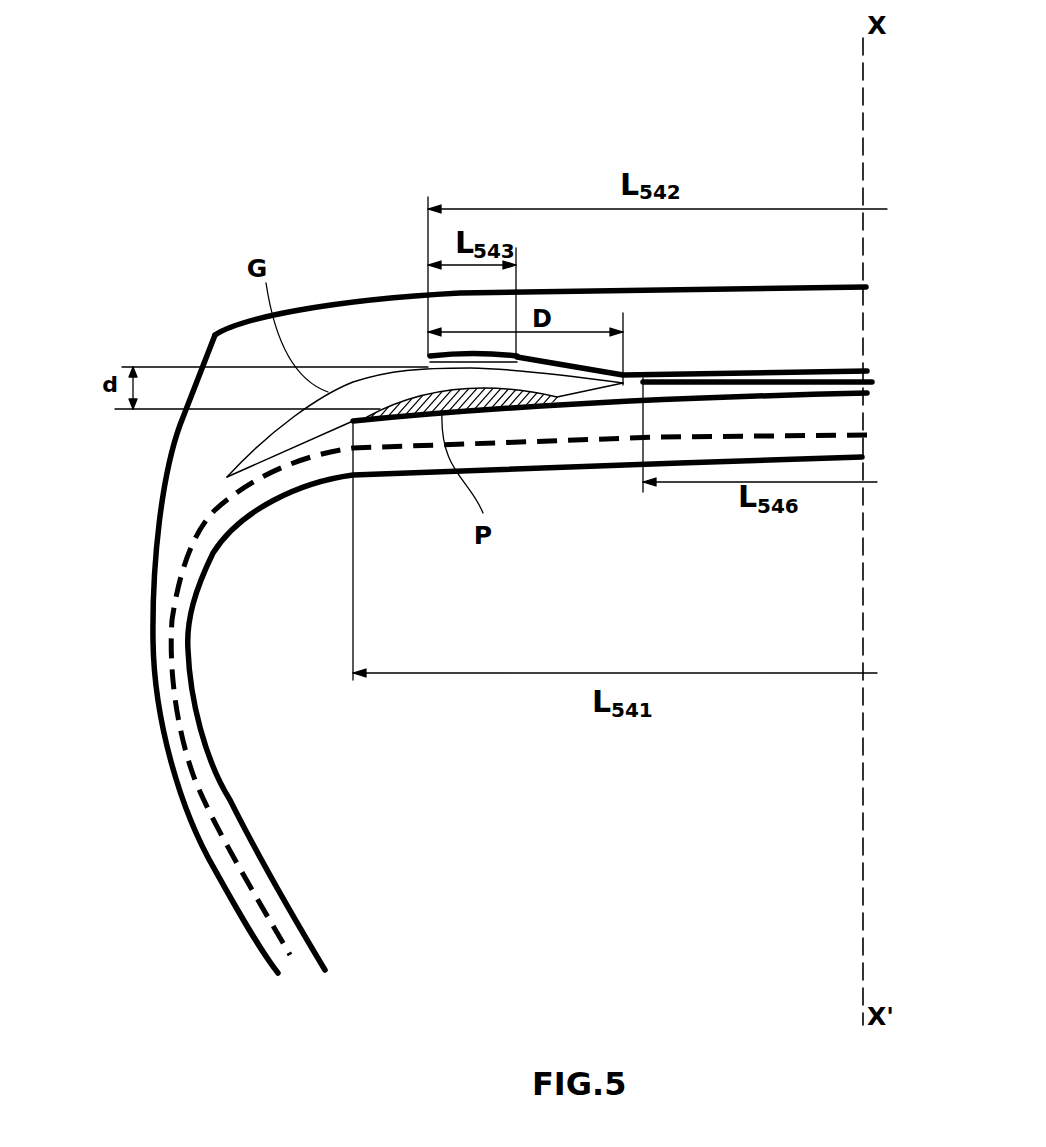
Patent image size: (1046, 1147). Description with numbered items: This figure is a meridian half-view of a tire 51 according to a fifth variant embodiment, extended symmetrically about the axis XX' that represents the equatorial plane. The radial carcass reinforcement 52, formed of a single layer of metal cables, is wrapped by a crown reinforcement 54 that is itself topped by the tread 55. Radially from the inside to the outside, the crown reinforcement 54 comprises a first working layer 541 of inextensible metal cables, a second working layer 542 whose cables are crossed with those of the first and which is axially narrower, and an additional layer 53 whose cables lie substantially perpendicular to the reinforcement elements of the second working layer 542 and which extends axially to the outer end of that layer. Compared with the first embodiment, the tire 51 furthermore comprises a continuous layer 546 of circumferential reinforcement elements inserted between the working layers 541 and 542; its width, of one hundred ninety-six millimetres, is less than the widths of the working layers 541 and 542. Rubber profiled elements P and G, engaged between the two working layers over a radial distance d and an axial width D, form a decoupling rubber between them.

The tire 51 is at (115, 292).
The radial carcass reinforcement 52 is at (180, 572).
The additional layer 53 is at (435, 352).
The crown reinforcement 54 is at (892, 383).
The first working layer 541 is at (808, 397).
The second working layer 542 is at (755, 367).
The continuous layer of circumferential reinforcement elements 546 is at (843, 366).
The tread 55 is at (760, 303).